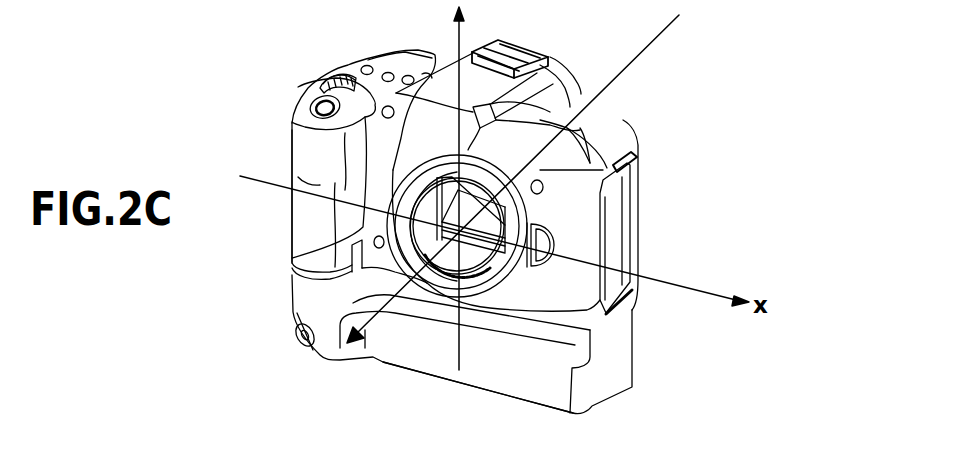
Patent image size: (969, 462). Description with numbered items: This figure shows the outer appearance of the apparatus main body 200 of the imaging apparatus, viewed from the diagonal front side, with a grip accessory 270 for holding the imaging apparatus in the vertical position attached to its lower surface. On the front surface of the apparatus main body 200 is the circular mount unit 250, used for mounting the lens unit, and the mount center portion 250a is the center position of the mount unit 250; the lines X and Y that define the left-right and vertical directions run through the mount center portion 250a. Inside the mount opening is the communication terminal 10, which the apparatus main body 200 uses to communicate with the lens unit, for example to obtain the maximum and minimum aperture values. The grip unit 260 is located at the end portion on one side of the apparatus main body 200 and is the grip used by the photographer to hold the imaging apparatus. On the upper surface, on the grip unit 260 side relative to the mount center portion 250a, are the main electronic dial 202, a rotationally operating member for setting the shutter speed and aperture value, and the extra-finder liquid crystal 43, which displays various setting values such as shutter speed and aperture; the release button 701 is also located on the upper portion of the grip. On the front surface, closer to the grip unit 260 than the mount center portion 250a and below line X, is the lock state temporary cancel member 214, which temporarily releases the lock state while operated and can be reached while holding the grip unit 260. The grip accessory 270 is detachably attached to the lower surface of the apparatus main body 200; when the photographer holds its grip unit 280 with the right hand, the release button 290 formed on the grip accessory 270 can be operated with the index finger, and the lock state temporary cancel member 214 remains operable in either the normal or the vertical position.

The apparatus main body 200 is at (572, 54).
The extra-finder liquid crystal 43 is at (388, 72).
The main electronic dial 202 is at (326, 70).
The shutter release button 701 is at (302, 100).
The grip unit 260 is at (290, 211).
The lock state temporary cancel member 214 is at (363, 237).
The mount unit 250 is at (632, 318).
The mount center portion 250a is at (603, 237).
The communication terminal 10 is at (480, 305).
The release button 290 is at (292, 340).
The grip accessory 270 is at (620, 360).
The grip unit 280 is at (493, 387).